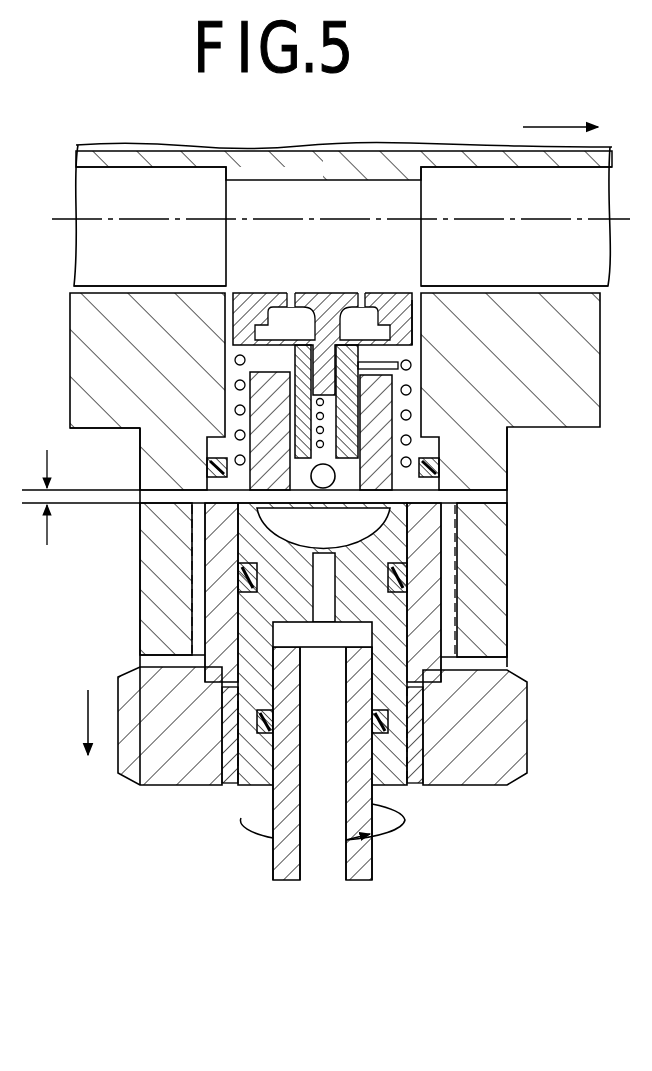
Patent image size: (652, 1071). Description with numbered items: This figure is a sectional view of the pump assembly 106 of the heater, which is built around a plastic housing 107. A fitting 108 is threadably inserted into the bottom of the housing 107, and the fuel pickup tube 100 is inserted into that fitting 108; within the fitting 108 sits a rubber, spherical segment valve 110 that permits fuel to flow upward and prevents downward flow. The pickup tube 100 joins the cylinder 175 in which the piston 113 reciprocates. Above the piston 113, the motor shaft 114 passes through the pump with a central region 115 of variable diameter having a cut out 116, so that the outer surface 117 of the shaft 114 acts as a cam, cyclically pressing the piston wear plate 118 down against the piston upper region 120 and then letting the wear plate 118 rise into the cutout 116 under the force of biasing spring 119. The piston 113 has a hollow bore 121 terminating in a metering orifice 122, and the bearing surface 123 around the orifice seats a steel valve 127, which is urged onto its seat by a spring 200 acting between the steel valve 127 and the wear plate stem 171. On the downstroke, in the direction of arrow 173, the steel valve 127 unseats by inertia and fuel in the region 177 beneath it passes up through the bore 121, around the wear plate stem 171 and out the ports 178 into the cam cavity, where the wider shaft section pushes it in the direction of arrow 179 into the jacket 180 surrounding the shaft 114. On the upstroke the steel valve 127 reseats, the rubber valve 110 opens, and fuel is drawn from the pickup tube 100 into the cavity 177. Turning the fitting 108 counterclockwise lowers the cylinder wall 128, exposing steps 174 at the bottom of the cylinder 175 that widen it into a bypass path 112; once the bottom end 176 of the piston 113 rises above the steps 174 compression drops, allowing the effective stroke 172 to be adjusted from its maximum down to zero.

The fuel pickup tube 100 is at (362, 858).
The pump assembly 106 is at (133, 573).
The plastic housing 107 is at (490, 552).
The fitting 108 is at (182, 762).
The rubber spherical segment valve 110 is at (425, 515).
The bypass path 112 is at (250, 415).
The piston 113 is at (370, 465).
The motor shaft 114 is at (176, 195).
The central region 115 is at (403, 220).
The cutout or cam cavity 116 is at (390, 164).
The outer surface 117 is at (228, 290).
The piston wear plate 118 is at (307, 287).
The biasing spring 119 is at (420, 379).
The piston upper region 120 is at (412, 312).
The hollow bore 121 is at (400, 341).
The metering orifice 122 is at (305, 510).
The bearing surface or valve seat 123 is at (322, 490).
The steel valve 127 is at (338, 482).
The cylinder wall 128 is at (207, 440).
The wear plate stem 171 is at (360, 397).
The effective stroke 172 is at (38, 483).
The arrow 173 is at (88, 716).
The steps 174 is at (140, 492).
The cylinder 175 is at (418, 448).
The bottom end 176 is at (322, 556).
The region or cavity 177 is at (325, 492).
The ports 178 is at (362, 292).
The arrow 179 is at (557, 127).
The jacket or lining 180 is at (485, 165).
The spring 200 is at (312, 402).